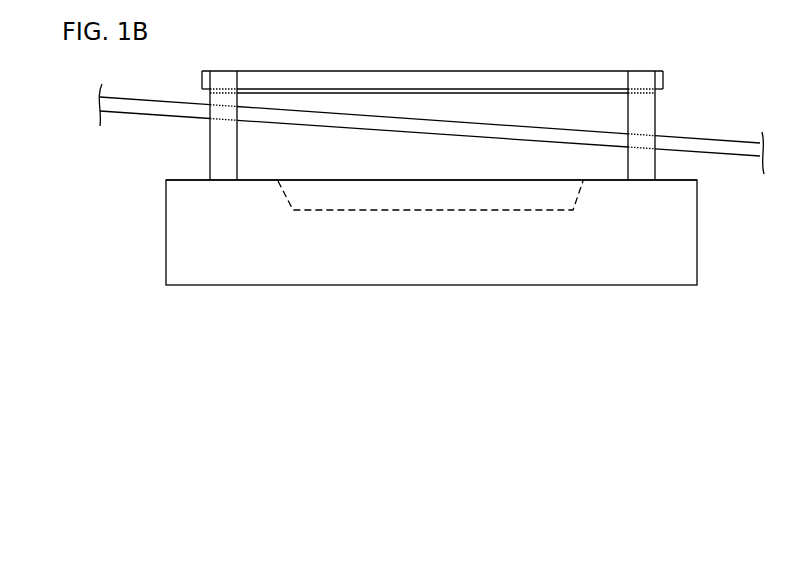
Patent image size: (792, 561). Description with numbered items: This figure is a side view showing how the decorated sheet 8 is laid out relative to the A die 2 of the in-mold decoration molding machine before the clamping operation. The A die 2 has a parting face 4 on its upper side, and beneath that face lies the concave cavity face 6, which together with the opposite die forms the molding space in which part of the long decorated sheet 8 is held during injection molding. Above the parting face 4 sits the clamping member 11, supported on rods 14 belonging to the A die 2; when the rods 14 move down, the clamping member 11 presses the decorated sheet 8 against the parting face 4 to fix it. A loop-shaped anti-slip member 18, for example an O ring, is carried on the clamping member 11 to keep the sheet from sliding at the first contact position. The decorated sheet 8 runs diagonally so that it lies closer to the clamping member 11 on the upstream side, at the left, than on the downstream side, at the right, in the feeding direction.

The A die 2 is at (697, 209).
The parting face 4 is at (683, 176).
The concave cavity face 6 is at (320, 210).
The decorated sheet 8 is at (720, 144).
The clamping member 11 is at (588, 70).
The rods 14 is at (646, 118).
The loop-shaped anti-slip member 18 is at (590, 92).